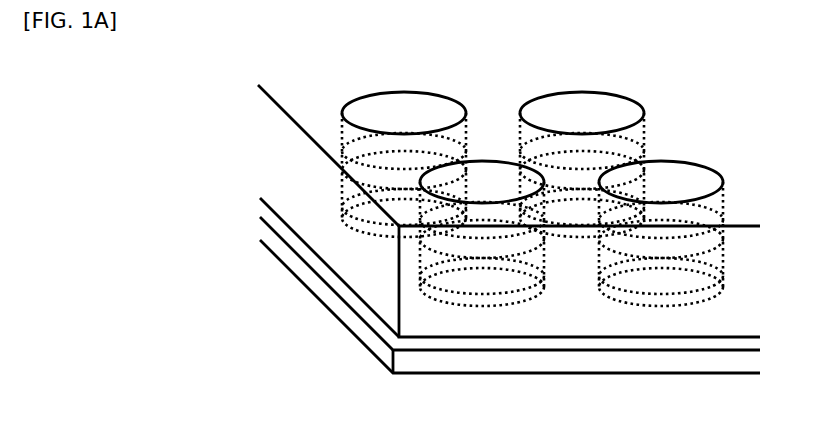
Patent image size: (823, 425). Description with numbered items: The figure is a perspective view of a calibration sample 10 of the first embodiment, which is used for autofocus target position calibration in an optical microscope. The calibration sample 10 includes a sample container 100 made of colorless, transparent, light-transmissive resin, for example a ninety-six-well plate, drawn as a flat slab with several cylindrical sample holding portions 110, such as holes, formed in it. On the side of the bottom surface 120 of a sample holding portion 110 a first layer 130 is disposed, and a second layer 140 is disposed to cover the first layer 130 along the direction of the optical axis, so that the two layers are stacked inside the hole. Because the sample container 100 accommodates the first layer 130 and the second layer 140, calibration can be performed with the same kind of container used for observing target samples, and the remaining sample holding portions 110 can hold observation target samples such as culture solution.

The calibration sample 10 is at (492, 230).
The sample container 100 is at (452, 373).
The sample holding portion 110 is at (487, 183).
The bottom surface 120 is at (460, 308).
The first layer 130 is at (443, 291).
The second layer 140 is at (422, 264).